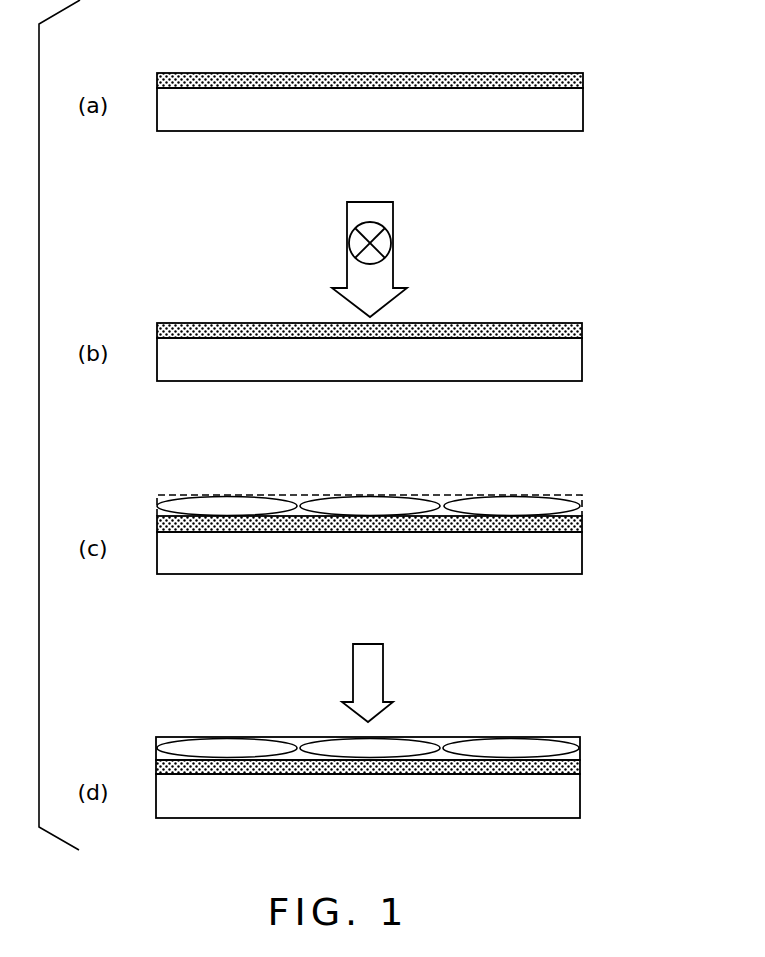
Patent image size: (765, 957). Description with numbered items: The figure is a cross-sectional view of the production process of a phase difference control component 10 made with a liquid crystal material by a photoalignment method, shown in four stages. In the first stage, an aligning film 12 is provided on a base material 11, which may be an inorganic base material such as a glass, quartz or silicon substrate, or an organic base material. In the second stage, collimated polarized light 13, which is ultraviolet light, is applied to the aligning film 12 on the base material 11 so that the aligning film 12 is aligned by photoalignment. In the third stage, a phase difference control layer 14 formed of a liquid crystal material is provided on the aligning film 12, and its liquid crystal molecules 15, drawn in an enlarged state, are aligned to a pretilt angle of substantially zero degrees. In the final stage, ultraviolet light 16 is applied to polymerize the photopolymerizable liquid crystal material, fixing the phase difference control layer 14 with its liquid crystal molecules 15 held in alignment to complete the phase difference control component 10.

The phase difference control component 10 is at (522, 720).
The base material 11 is at (576, 112).
The aligning film 12 is at (583, 78).
The collimated polarized light 13 is at (383, 212).
The phase difference control layer 14 is at (583, 495).
The liquid crystal molecules 15 is at (197, 506).
The ultraviolet light 16 is at (373, 655).